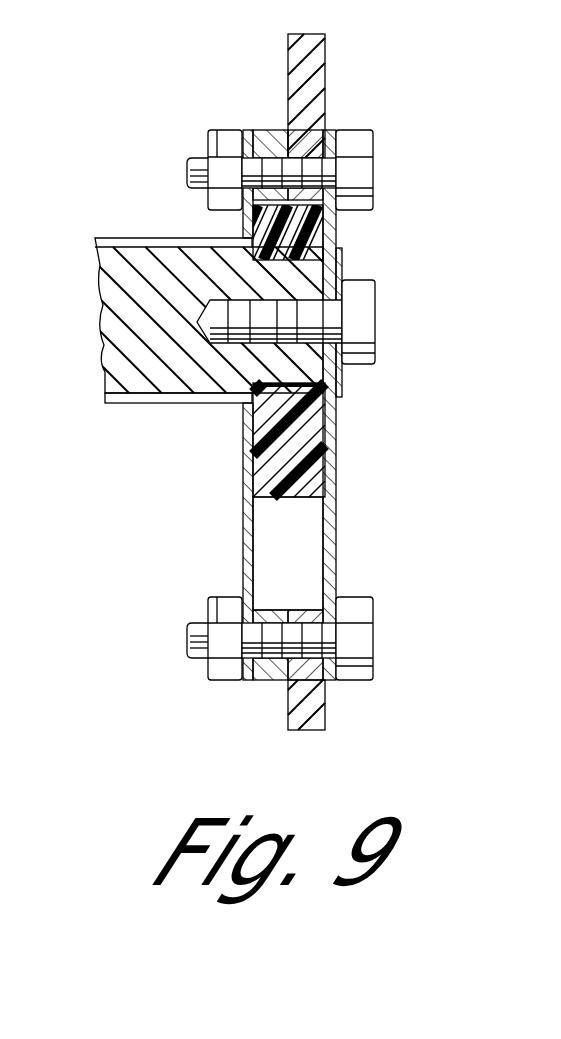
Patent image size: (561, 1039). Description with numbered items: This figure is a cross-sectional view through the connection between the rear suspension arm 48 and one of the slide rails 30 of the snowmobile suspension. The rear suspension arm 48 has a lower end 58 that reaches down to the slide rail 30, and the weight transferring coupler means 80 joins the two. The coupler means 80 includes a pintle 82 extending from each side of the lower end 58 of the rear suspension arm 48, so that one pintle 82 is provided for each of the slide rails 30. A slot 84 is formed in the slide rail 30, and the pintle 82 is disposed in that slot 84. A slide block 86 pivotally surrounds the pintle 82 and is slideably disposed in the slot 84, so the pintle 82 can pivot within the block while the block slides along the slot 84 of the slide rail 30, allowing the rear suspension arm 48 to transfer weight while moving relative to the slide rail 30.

The slide rail 30 is at (300, 730).
The rear suspension arm 48 is at (130, 238).
The lower end 58 is at (150, 403).
The weight transferring coupler means 80 is at (342, 472).
The pintle 82 is at (307, 250).
The slot 84 is at (322, 550).
The slide block 86 is at (263, 480).